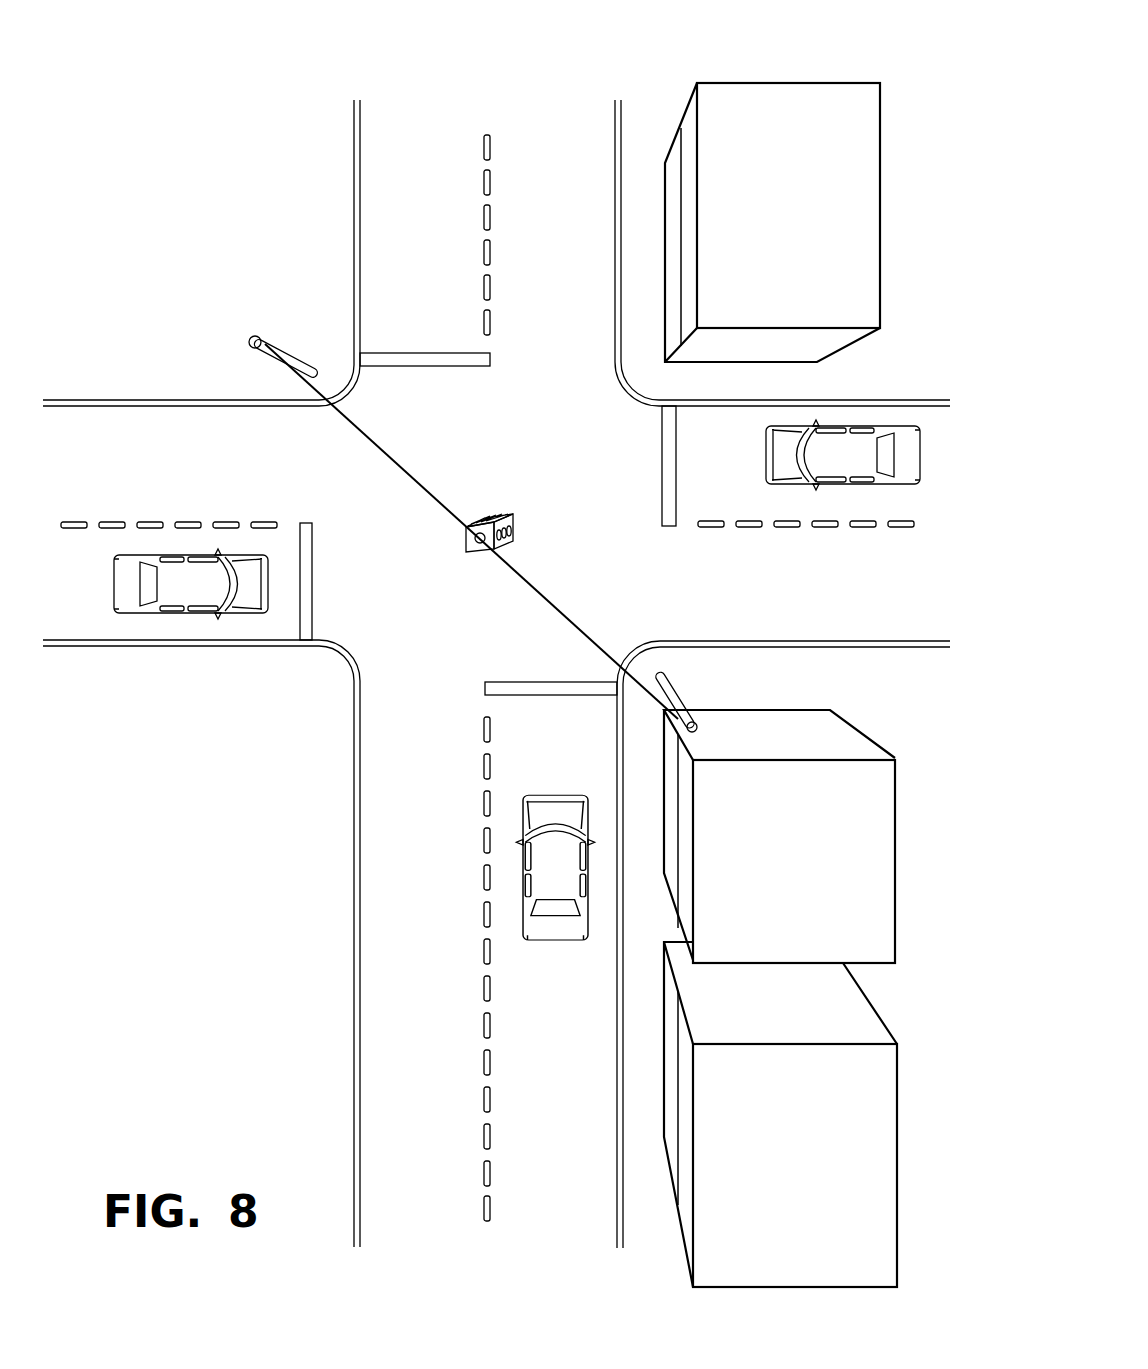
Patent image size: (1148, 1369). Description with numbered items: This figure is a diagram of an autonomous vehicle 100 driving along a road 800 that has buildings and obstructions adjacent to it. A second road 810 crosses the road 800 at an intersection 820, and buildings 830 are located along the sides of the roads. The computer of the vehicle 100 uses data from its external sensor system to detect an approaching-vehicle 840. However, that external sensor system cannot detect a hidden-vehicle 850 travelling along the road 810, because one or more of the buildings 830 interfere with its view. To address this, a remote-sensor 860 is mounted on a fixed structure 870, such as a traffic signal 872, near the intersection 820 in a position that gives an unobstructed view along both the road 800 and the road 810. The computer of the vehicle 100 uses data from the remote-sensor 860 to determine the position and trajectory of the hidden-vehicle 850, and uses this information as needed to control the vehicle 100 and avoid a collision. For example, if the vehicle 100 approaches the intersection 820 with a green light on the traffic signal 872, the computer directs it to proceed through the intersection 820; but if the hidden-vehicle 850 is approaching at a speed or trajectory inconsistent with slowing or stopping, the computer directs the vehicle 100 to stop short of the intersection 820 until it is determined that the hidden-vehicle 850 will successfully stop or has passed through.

The vehicle 100 is at (545, 875).
The road 800 is at (400, 1132).
The road 810 is at (143, 442).
The intersection 820 is at (356, 626).
The buildings 830 is at (833, 83).
The approaching-vehicle 840 is at (173, 592).
The hidden-vehicle 850 is at (840, 428).
The remote-sensor 860 is at (473, 534).
The fixed structure 870 is at (503, 517).
The traffic signal 872 is at (513, 537).